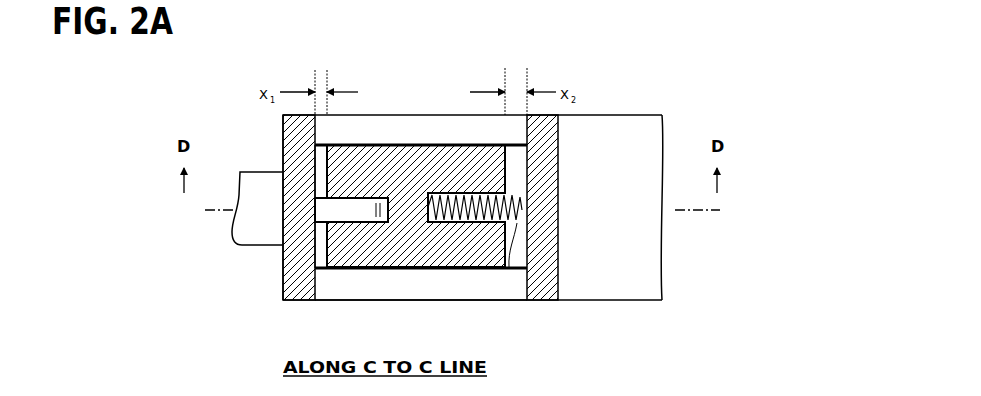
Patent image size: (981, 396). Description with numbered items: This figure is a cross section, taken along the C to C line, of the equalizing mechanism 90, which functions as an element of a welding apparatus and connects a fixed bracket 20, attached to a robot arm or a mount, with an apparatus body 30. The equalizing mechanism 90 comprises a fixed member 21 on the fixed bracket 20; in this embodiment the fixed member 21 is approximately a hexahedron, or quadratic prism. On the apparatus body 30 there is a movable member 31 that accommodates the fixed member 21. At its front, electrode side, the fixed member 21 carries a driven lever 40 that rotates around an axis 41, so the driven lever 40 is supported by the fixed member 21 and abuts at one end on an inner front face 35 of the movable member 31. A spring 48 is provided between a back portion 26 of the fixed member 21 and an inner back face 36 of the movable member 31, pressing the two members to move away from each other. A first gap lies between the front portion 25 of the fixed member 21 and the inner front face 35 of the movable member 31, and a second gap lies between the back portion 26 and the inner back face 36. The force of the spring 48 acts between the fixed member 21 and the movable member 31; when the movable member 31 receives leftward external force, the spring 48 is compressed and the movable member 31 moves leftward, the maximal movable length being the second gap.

The fixed bracket 20 is at (513, 76).
The fixed member 21 is at (468, 155).
The front portion 25 is at (330, 261).
The back portion 26 is at (523, 270).
The apparatus body 30 is at (434, 248).
The movable member 31 is at (442, 285).
The inner front face 35 is at (317, 237).
The inner back face 36 is at (517, 223).
The driven lever 40 is at (343, 208).
The axis 41 is at (376, 197).
The spring 48 is at (558, 138).
The equalizing mechanism 90 is at (694, 90).